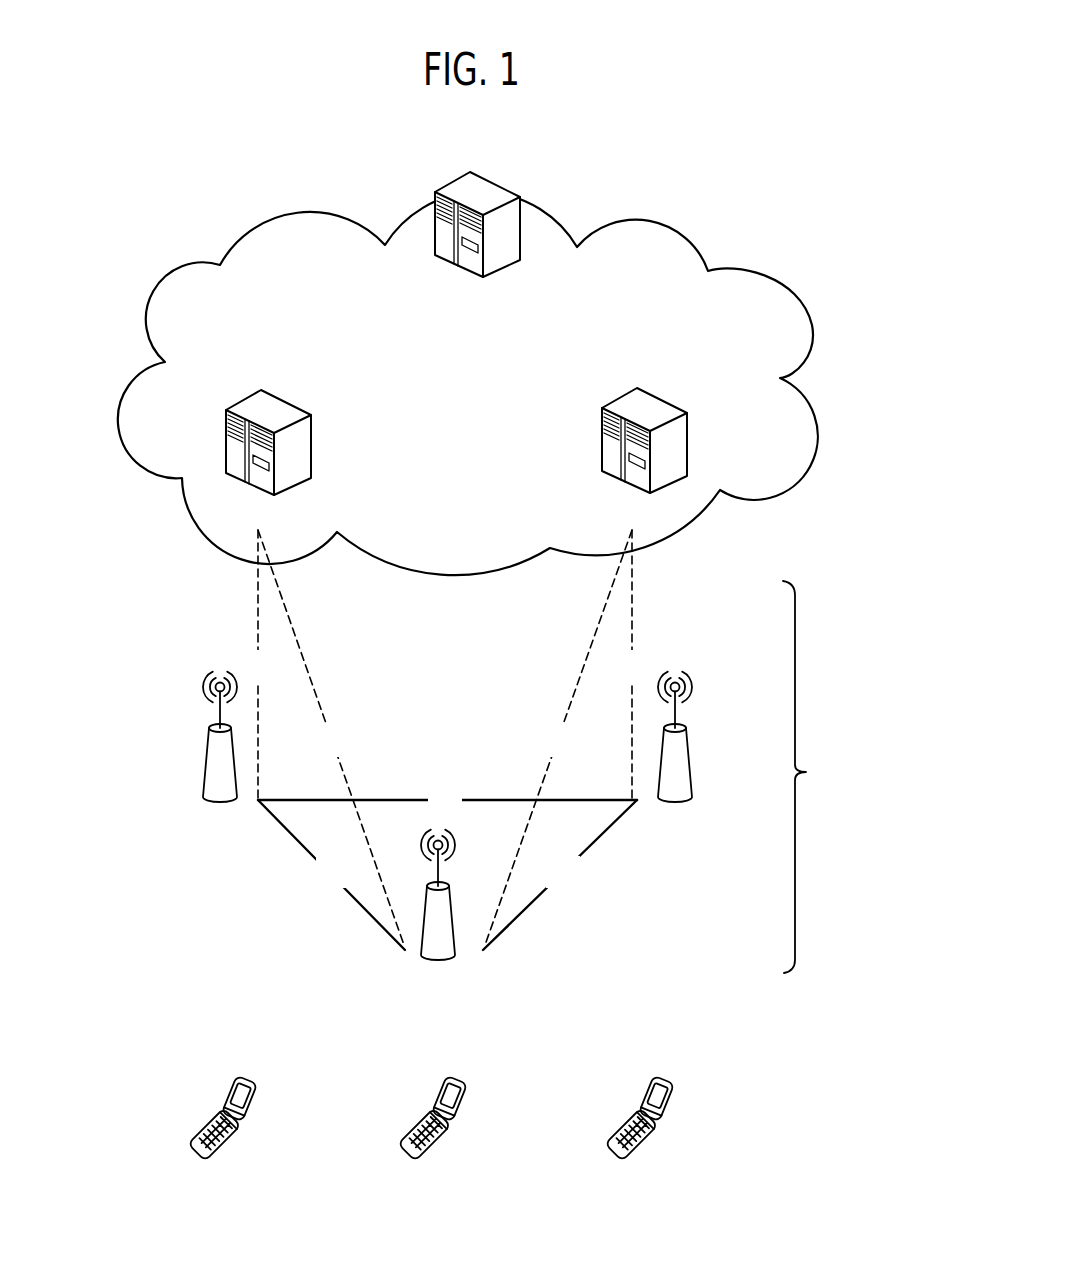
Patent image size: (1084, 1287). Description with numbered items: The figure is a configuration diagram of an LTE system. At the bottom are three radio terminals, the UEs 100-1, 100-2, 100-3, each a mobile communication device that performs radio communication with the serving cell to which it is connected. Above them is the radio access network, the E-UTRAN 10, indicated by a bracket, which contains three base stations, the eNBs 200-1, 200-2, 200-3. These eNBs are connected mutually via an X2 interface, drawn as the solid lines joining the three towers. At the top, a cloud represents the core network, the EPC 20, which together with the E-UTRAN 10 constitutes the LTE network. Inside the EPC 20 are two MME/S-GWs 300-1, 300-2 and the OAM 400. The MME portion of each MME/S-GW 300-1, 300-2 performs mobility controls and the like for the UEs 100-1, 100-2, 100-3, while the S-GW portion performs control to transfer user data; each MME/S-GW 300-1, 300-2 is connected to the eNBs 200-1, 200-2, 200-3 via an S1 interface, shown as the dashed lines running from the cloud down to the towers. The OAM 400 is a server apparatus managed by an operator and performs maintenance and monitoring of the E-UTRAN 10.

The E-UTRAN 10 is at (579, 751).
The EPC 20 is at (688, 236).
The UE 100-1 is at (242, 1083).
The UE 100-2 is at (457, 1082).
The UE 100-3 is at (660, 1080).
The eNB 200-1 is at (200, 763).
The eNB 200-2 is at (458, 933).
The eNB 200-3 is at (688, 742).
The MME/S-GW 300-1 is at (291, 404).
The MME/S-GW 300-2 is at (672, 383).
The OAM 400 is at (492, 183).